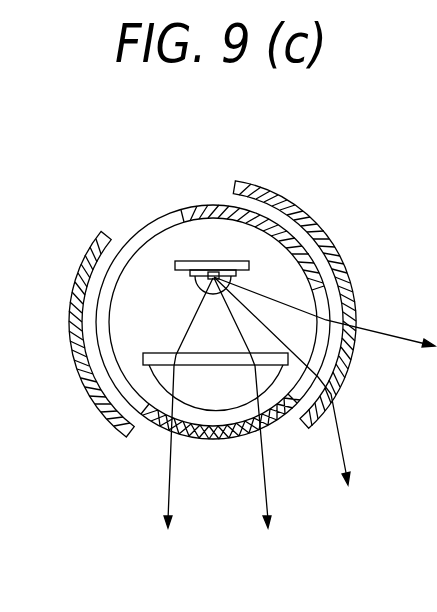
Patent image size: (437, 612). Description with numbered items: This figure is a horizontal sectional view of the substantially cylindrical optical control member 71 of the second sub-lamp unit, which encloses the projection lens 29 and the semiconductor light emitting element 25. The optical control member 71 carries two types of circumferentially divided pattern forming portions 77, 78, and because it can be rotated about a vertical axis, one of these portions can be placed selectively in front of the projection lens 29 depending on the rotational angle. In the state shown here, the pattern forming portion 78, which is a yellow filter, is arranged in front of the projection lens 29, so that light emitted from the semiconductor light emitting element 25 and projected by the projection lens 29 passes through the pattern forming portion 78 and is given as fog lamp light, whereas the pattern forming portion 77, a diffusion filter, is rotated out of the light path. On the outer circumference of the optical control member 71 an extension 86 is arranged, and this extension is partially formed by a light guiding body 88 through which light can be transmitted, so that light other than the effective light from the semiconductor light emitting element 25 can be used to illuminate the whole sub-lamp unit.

The optical control member 71 is at (148, 220).
The pattern forming portion 77 is at (194, 205).
The pattern forming portion 78 is at (226, 438).
The extension 86 is at (77, 260).
The light guiding body 88 is at (330, 240).
The semiconductor light emitting element 25 is at (193, 281).
The projection lens 29 is at (210, 403).